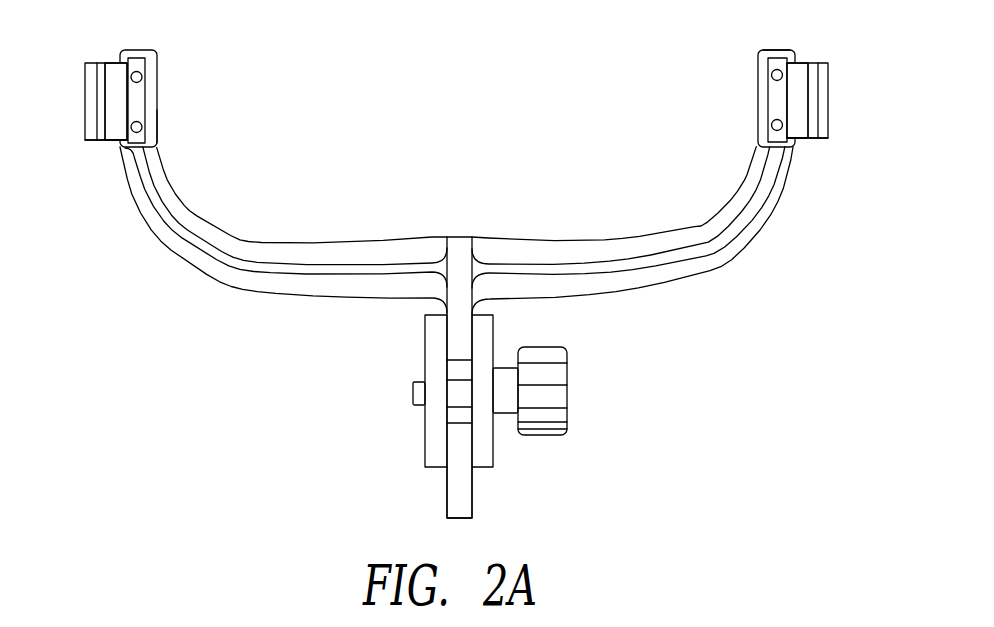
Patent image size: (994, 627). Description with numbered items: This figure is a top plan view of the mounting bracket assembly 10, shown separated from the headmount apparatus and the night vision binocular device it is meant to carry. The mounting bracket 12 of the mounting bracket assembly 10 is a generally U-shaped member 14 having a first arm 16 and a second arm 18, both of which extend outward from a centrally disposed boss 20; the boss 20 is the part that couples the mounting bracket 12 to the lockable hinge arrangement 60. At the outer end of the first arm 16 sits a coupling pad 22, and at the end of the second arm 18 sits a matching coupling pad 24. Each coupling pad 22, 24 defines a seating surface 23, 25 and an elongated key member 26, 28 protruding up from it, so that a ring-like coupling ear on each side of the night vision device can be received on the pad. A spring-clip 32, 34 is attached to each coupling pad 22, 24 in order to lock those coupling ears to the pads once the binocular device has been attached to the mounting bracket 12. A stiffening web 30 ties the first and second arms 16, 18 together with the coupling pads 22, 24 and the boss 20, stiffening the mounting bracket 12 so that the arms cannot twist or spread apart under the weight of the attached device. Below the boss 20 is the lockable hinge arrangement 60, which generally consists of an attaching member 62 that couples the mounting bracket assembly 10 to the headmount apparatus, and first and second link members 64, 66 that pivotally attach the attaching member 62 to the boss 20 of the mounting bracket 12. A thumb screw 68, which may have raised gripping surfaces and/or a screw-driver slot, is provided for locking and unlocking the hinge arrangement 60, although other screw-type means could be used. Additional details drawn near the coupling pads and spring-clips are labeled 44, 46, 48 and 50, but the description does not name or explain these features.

The mounting bracket assembly 10 is at (190, 365).
The mounting bracket 12 is at (668, 230).
The U-shaped member 14 is at (730, 263).
The first arm 16 is at (317, 258).
The second arm 18 is at (592, 257).
The boss 20 is at (460, 282).
The coupling pad 22 is at (173, 86).
The seating surface 23 is at (146, 118).
The coupling pad 24 is at (741, 88).
The seating surface 25 is at (760, 62).
The elongated key member 26 is at (140, 97).
The elongated key member 28 is at (777, 95).
The stiffening web 30 is at (228, 273).
The spring-clip 32 is at (81, 95).
The spring-clip 34 is at (835, 92).
The left block bottom 44 is at (112, 141).
The right block bottom 46 is at (808, 140).
The left block inner portion 48 is at (118, 90).
The right block inner portion 50 is at (798, 72).
The lockable hinge arrangement 60 is at (455, 419).
The attaching member 62 is at (460, 503).
The first link member 64 is at (440, 453).
The second link member 66 is at (482, 457).
The thumb screw 68 is at (547, 347).